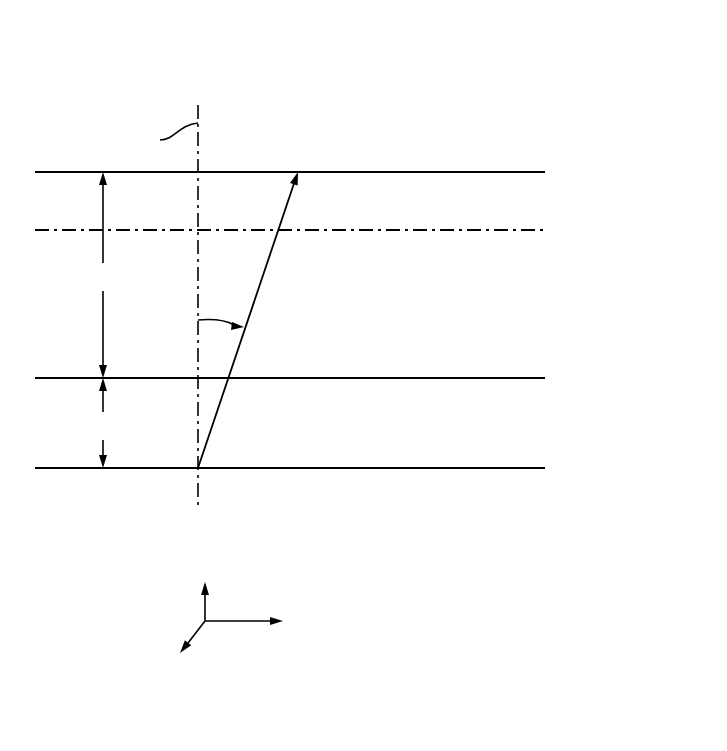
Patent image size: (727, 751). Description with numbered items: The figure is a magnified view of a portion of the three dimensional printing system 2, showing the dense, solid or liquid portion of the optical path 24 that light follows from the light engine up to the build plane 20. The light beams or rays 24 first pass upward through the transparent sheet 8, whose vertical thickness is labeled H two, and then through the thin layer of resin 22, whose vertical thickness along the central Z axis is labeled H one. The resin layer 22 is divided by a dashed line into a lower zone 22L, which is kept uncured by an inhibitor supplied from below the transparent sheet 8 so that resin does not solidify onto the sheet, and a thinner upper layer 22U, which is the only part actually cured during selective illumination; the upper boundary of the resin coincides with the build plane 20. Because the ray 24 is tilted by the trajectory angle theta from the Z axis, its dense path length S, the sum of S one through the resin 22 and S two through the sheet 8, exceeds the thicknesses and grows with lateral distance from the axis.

The three dimensional printing system 2 is at (400, 61).
The build plane 20 is at (518, 172).
The thin layer of resin 22 is at (333, 341).
The upper layer of resin 22U is at (520, 202).
The zone of resin 22L is at (503, 306).
The optical path 24 is at (288, 198).
The transparent sheet 8 is at (483, 438).